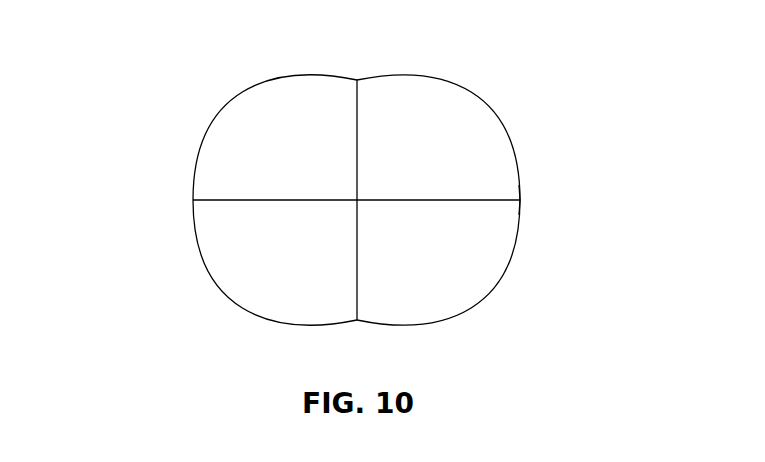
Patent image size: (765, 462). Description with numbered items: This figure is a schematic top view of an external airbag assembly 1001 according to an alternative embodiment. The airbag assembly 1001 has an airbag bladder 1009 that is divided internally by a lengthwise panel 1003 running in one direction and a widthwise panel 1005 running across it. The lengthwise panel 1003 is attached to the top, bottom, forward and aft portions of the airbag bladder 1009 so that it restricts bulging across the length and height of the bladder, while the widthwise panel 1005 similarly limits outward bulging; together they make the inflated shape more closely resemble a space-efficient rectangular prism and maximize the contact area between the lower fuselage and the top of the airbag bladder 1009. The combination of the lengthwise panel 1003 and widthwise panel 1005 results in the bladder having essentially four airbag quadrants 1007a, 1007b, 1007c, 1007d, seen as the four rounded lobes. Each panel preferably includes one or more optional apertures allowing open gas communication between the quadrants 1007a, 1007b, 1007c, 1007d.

The airbag assembly 1001 is at (181, 70).
The lengthwise panel 1003 is at (475, 202).
The widthwise panel 1005 is at (357, 118).
The airbag quadrant 1007a is at (193, 167).
The airbag quadrant 1007b is at (513, 128).
The airbag quadrant 1007c is at (500, 289).
The airbag quadrant 1007d is at (212, 288).
The airbag bladder 1009 is at (522, 170).